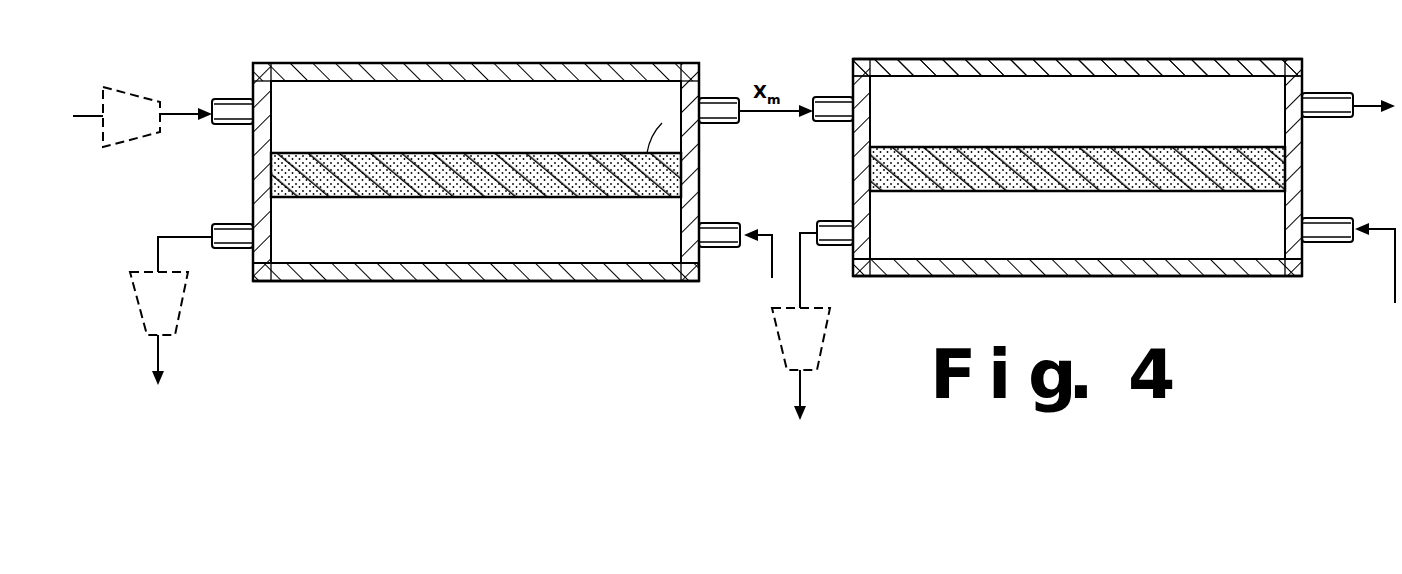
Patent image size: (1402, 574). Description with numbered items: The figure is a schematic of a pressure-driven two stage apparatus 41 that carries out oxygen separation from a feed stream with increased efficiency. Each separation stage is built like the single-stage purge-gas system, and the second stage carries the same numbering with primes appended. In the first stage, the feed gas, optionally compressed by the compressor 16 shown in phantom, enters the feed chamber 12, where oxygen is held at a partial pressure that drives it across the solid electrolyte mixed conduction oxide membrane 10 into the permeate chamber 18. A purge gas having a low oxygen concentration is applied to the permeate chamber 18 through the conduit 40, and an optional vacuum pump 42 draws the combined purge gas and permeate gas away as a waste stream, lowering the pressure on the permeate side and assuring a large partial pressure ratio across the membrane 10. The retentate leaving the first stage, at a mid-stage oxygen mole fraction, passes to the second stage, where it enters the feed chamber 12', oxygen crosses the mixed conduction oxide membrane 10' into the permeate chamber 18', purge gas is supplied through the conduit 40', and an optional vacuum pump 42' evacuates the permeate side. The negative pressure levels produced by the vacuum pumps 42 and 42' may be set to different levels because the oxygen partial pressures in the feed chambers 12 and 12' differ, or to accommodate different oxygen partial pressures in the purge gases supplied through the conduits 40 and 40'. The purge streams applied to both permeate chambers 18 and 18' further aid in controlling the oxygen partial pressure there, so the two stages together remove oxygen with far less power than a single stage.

The solid electrolyte mixed conduction oxide membrane 10 is at (514, 175).
The feed chamber 12 is at (476, 153).
The compressor 16 is at (130, 123).
The permeate chamber 18 is at (476, 285).
The conduit 40 is at (741, 268).
The vacuum pump 42 is at (156, 311).
The pressure-driven two stage apparatus 41 is at (1222, 44).
The feed chamber 12' is at (1077, 56).
The mixed conduction oxide membrane 10' is at (1131, 170).
The permeate chamber 18' is at (1077, 280).
The conduit 40' is at (1369, 266).
The vacuum pump 42' is at (769, 326).